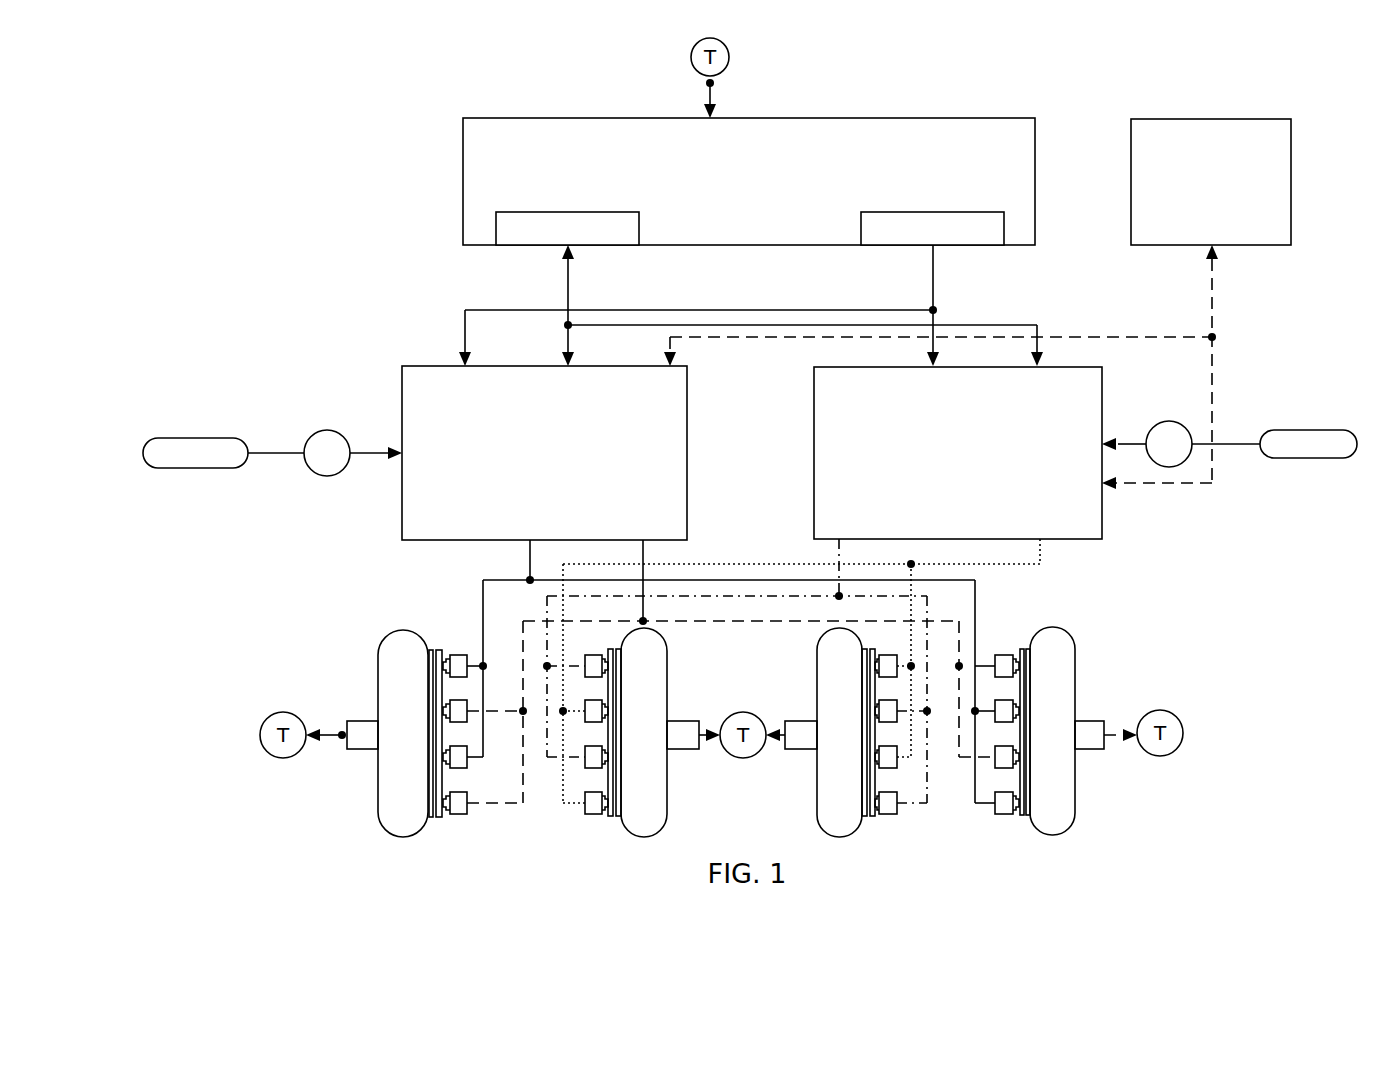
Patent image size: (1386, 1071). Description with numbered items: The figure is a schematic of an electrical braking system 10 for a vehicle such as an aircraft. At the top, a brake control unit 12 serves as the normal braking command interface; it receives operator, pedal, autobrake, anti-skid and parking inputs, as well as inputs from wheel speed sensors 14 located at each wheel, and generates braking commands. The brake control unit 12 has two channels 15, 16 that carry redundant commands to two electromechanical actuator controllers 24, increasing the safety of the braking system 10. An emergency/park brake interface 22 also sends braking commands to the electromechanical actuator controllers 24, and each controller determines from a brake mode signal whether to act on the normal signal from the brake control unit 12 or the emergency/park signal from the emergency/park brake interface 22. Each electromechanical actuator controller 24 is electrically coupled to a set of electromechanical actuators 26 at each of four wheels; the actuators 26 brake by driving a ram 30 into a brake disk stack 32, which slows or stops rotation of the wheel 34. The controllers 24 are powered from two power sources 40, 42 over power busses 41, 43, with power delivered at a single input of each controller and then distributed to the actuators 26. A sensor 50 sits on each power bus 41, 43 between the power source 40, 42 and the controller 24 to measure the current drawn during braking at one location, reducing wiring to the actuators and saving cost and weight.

The electrical braking system 10 is at (296, 108).
The brake control unit 12 is at (913, 140).
The wheel speed sensor 14 is at (363, 742).
The channel 15 is at (510, 235).
The channel 16 is at (992, 238).
The emergency/park brake interface 22 is at (1170, 130).
The electromechanical actuator controller 24 is at (400, 363).
The electromechanical actuator 26 is at (465, 810).
The ram 30 is at (445, 650).
The brake disk stack 32 is at (437, 815).
The wheel 34 is at (400, 660).
The power source 40 is at (158, 438).
The power bus 41 is at (275, 455).
The power source 42 is at (1280, 428).
The power bus 43 is at (1238, 445).
The sensor 50 is at (322, 430).